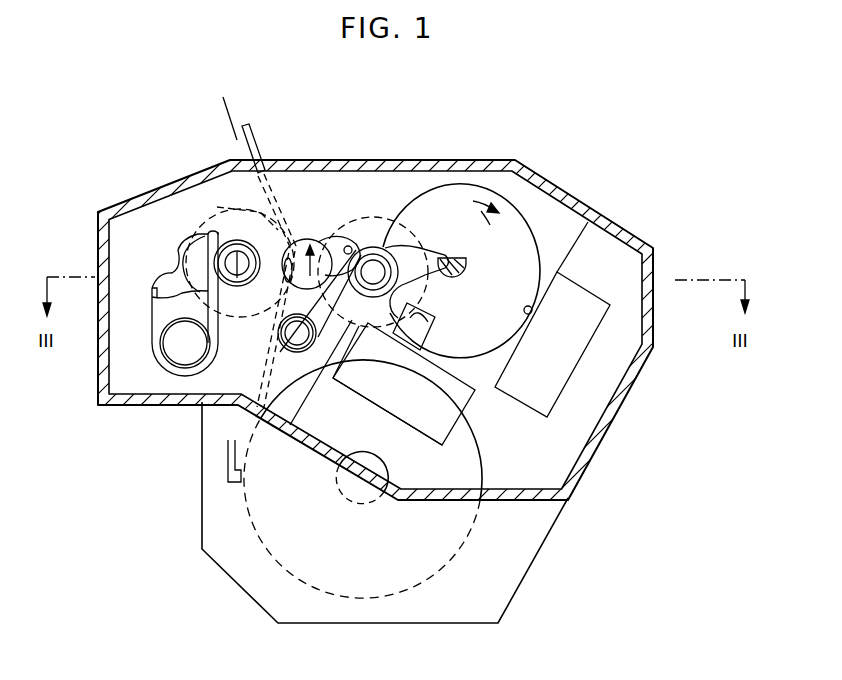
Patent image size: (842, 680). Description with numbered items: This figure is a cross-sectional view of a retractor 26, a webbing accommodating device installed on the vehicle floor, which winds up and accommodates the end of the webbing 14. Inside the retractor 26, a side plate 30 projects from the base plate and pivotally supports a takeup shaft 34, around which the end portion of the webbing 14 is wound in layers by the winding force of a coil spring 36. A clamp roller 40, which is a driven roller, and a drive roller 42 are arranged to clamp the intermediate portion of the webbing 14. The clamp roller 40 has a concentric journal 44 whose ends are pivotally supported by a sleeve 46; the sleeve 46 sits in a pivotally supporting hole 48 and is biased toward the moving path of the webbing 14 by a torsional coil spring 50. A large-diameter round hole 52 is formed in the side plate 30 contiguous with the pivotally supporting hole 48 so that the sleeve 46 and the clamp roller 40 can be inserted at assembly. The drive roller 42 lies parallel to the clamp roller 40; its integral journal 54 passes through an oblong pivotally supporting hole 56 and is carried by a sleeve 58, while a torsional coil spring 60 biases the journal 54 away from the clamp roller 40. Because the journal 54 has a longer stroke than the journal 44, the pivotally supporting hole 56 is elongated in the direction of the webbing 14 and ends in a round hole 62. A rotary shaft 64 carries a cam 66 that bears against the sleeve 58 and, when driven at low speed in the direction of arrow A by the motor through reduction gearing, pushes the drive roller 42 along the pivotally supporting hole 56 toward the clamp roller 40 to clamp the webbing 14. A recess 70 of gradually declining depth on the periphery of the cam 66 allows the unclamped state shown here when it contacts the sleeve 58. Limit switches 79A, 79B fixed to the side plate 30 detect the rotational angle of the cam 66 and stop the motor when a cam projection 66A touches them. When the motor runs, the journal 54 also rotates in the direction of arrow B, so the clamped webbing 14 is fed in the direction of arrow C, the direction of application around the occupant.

The webbing 14 is at (257, 151).
The retractor 26 is at (590, 178).
The side plate 30 is at (628, 322).
The takeup shaft 34 is at (356, 505).
The coil spring 36 is at (454, 563).
The clamp roller 40 is at (223, 211).
The drive roller 42 is at (313, 222).
The journal 44 is at (212, 330).
The sleeve 46 is at (238, 250).
The pivotally supporting hole 48 is at (237, 238).
The torsional coil spring 50 is at (218, 346).
The round hole 52 is at (177, 251).
The journal 54 is at (460, 257).
The pivotally supporting hole 56 is at (355, 224).
The sleeve 58 is at (408, 250).
The torsional coil spring 60 is at (404, 384).
The round hole 62 is at (360, 332).
The rotary shaft 64 is at (466, 280).
The cam 66 is at (530, 252).
The cam projection 66A is at (433, 328).
The recess 70 is at (420, 295).
The limit switch 79A is at (408, 417).
The limit switch 79B is at (580, 345).
The arrow A is at (488, 221).
The arrow B is at (295, 242).
The arrow C is at (237, 116).